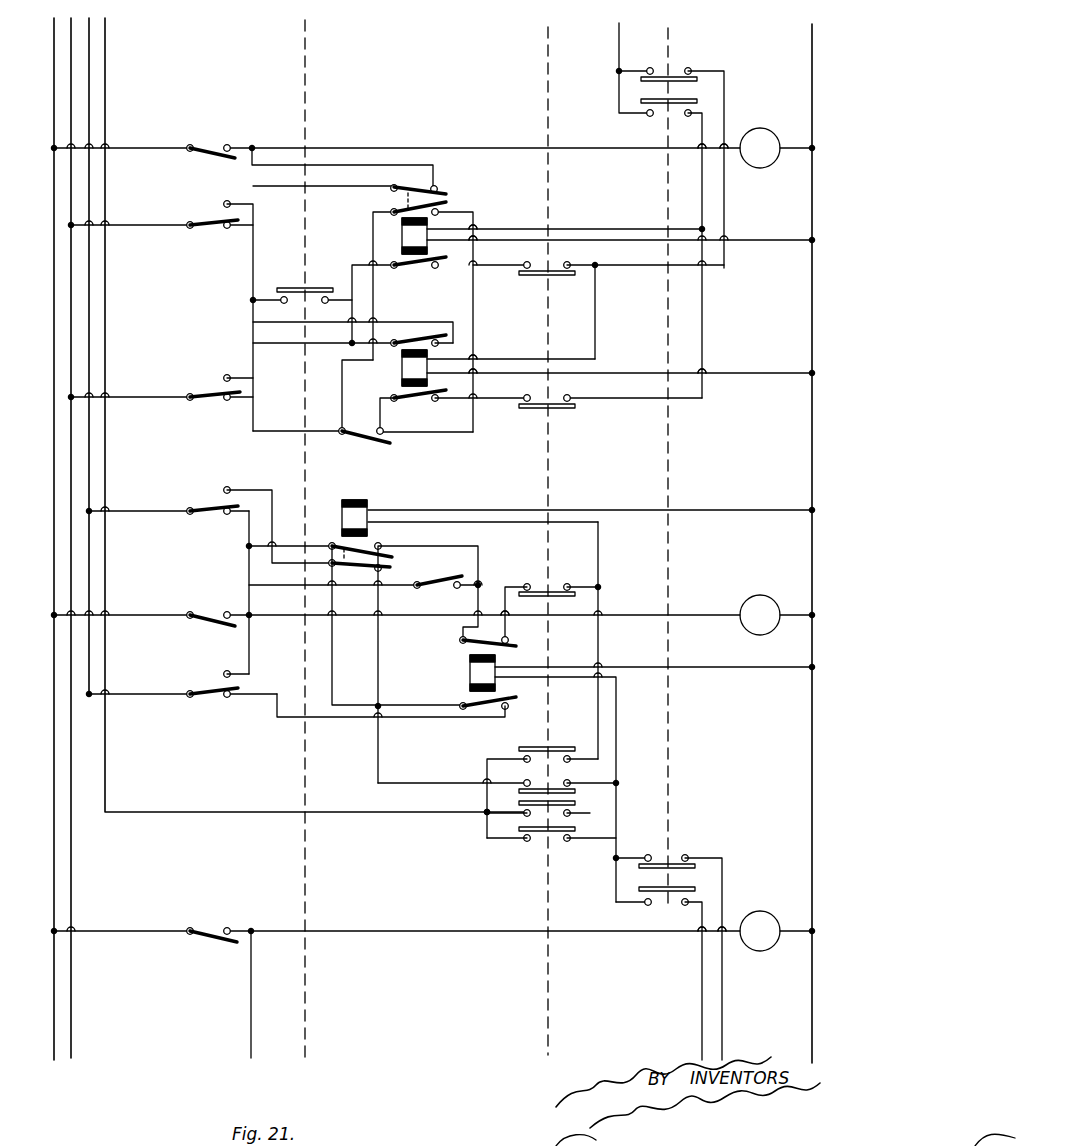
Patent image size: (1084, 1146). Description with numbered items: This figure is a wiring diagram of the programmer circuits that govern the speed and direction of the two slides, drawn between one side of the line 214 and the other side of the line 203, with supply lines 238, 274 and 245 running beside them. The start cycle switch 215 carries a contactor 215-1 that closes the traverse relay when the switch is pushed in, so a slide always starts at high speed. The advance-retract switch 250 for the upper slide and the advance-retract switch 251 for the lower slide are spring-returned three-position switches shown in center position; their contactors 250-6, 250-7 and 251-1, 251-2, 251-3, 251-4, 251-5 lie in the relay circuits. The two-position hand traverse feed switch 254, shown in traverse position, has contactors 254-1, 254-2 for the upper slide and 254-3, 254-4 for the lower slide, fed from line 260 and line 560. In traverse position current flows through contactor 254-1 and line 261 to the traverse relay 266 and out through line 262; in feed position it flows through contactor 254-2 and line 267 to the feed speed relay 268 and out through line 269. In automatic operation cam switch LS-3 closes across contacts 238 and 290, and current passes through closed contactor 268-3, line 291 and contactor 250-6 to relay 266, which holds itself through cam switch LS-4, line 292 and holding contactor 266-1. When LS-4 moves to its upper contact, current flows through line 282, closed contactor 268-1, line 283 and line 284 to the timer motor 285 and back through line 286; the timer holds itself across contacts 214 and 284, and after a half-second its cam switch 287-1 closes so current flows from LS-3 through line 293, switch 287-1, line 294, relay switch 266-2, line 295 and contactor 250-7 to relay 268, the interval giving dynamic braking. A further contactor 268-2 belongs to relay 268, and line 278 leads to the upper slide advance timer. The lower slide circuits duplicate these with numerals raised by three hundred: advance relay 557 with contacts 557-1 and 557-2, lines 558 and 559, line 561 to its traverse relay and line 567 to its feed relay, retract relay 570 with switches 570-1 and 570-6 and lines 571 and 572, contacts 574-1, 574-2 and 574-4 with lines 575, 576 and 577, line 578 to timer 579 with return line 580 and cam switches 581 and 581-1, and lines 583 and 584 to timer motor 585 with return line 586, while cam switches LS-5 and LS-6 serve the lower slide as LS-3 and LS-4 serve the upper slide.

The line 214 is at (54, 88).
The line 238 is at (71, 66).
The line contact 274 is at (91, 45).
The line 245 is at (106, 21).
The line 203 is at (812, 42).
The start cycle switch 215 is at (307, 35).
The contactor 215-1 is at (305, 290).
The advance-retract switch 250 is at (547, 93).
The contactor 250-6 is at (524, 276).
The contactor 250-7 is at (566, 408).
The advance-retract switch 251 is at (548, 1050).
The contactor 251-1 is at (574, 594).
The contactor 251-2 is at (564, 748).
The contactor 251-3 is at (520, 792).
The contactor 251-4 is at (575, 803).
The contactor 251-5 is at (575, 828).
The hand traverse feed switch 254 is at (658, 64).
The contactor 254-1 is at (698, 79).
The contactor 254-2 is at (698, 101).
The contactor 254-3 is at (696, 865).
The contactor 254-4 is at (696, 891).
The line 260 is at (619, 59).
The line 261 is at (724, 197).
The line 262 is at (650, 374).
The traverse relay 266 is at (402, 372).
The holding contactor 266-1 is at (430, 340).
The relay switch 266-2 is at (397, 408).
The line 267 is at (702, 139).
The feed speed relay 268 is at (402, 232).
The contactor 268-1 is at (438, 186).
The relay contact 268-2 is at (446, 206).
The contactor 268-3 is at (394, 274).
The line 269 is at (738, 242).
The line 278 is at (212, 144).
The line 282 is at (254, 188).
The line 283 is at (354, 164).
The line 284 is at (424, 148).
The timer motor 285 is at (779, 138).
The line 286 is at (779, 154).
The cam switch 287-1 is at (350, 448).
The line 290 is at (352, 264).
The line 291 is at (524, 274).
The line 292 is at (252, 292).
The line 293 is at (254, 448).
The line 294 is at (473, 214).
The line 295 is at (477, 412).
The programmer cam switch LS-3 is at (214, 390).
The feed cam switch LS-4 is at (206, 220).
The limit switch LS-5 is at (206, 698).
The limit switch LS-6 is at (206, 504).
The advance relay 557 is at (355, 499).
The relay contact 557-1 is at (394, 568).
The relay contact 557-2 is at (322, 538).
The line 558 is at (598, 536).
The line 559 is at (744, 510).
The line 560 is at (619, 885).
The line 561 is at (722, 1014).
The line 567 is at (700, 1044).
The retract relay 570 is at (470, 669).
The relay contact 570-1 is at (464, 706).
The relay contact 570-6 is at (460, 646).
The line 571 is at (614, 704).
The line 572 is at (712, 668).
The conductor 574-1 is at (248, 554).
The conductor 574-2 is at (441, 546).
The conductor 574-4 is at (288, 500).
The conductor 575 is at (384, 730).
The conductor 576 is at (332, 654).
The conductor 577 is at (430, 784).
The line 578 is at (290, 614).
The timer 579 is at (768, 596).
The line 580 is at (782, 620).
The cam switch 581 is at (206, 606).
The cam switch 581-1 is at (440, 590).
The line 583 is at (251, 1042).
The line 584 is at (446, 944).
The timer motor 585 is at (752, 952).
The line 586 is at (782, 950).